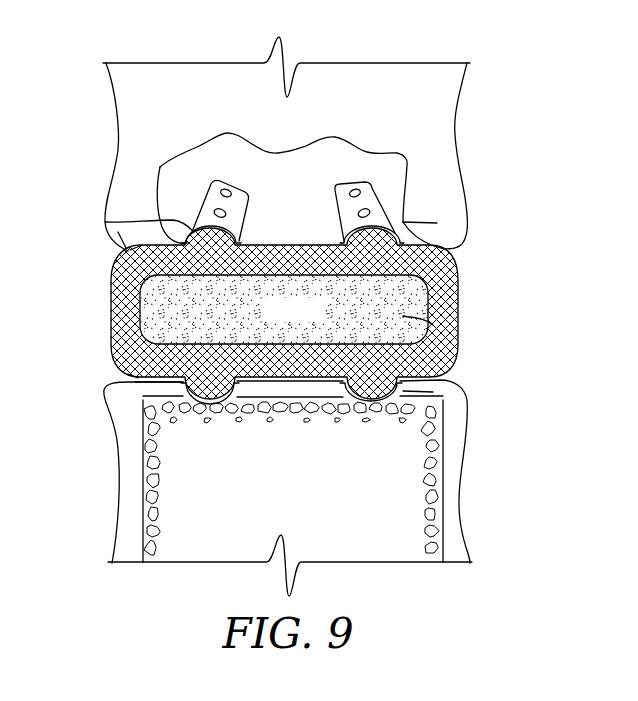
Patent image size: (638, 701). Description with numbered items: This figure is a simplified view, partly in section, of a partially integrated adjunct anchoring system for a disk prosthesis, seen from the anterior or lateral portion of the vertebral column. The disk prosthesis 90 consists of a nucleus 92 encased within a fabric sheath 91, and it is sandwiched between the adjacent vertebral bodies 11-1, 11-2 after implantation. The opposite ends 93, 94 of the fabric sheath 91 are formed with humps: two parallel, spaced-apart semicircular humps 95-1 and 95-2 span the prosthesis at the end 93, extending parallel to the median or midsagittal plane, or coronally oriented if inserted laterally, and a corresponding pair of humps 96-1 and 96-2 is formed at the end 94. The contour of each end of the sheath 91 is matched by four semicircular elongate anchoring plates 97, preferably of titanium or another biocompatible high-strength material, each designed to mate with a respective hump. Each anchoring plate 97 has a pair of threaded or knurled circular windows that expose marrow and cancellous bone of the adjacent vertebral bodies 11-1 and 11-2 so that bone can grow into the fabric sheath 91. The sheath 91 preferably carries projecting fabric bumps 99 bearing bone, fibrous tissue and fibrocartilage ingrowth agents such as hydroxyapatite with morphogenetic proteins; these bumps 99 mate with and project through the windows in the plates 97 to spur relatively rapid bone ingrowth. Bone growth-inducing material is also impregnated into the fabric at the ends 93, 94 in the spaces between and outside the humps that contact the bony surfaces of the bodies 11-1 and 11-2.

The vertebral body 11-1 is at (387, 78).
The vertebral body 11-2 is at (369, 546).
The disk prosthesis 90 is at (306, 285).
The fabric sheath 91 is at (310, 315).
The nucleus 92 is at (449, 342).
The end of fabric sheath 93 is at (137, 248).
The end of fabric sheath 94 is at (131, 378).
The semicircular hump 95-1 is at (118, 232).
The semicircular hump 95-2 is at (437, 223).
The semicircular hump 96-1 is at (135, 382).
The semicircular hump 96-2 is at (433, 392).
The anchoring plate 97 is at (285, 276).
The fabric bump 99 is at (228, 193).